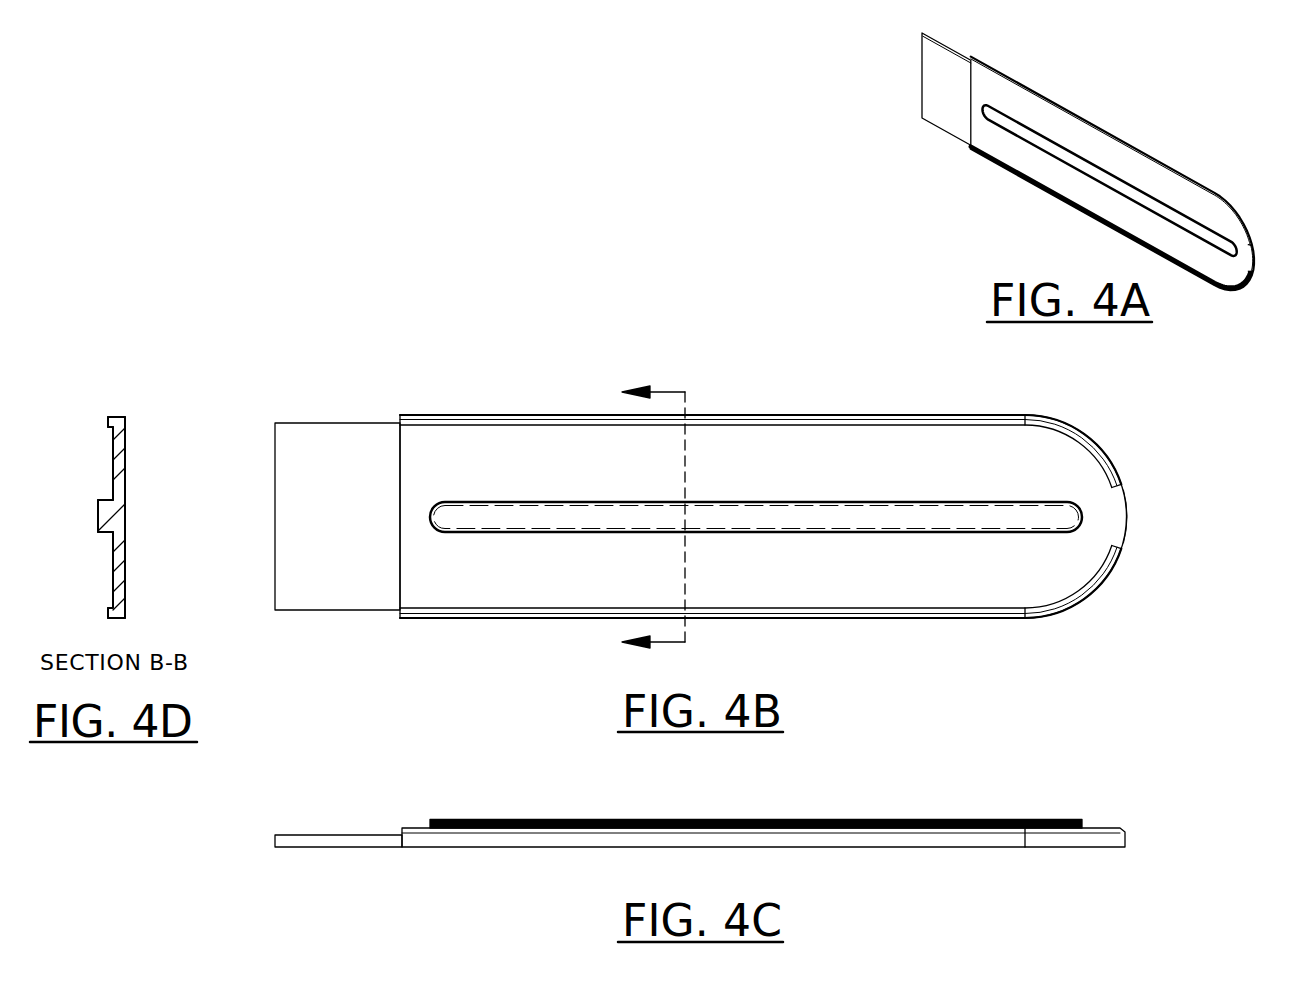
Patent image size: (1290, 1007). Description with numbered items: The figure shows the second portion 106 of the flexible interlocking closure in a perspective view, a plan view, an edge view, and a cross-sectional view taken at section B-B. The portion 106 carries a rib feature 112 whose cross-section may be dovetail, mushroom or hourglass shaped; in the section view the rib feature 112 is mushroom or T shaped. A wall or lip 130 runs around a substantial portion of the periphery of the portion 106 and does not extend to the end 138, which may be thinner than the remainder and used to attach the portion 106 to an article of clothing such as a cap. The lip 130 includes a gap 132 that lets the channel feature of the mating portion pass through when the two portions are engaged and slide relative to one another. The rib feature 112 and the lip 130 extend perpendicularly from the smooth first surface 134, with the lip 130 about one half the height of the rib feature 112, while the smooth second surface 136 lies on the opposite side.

In FIG. 4A, the second portion 106 is at (1105, 131).
In FIG. 4B, the second portion 106 is at (731, 475).
In FIG. 4C, the second portion 106 is at (700, 811).
In FIG. 4D, the second portion 106 is at (109, 460).
In FIG. 4B, the rib feature 112 is at (527, 503).
In FIG. 4D, the rib feature 112 is at (98, 522).
In FIG. 4B, the lip 130 is at (552, 416).
In FIG. 4D, the lip 130 is at (108, 420).
In FIG. 4B, the gap 132 is at (1126, 522).
In FIG. 4B, the first surface 134 is at (502, 589).
In FIG. 4C, the second surface 136 is at (795, 848).
In FIG. 4D, the second surface 136 is at (128, 443).
In FIG. 4B, the end 138 is at (336, 423).